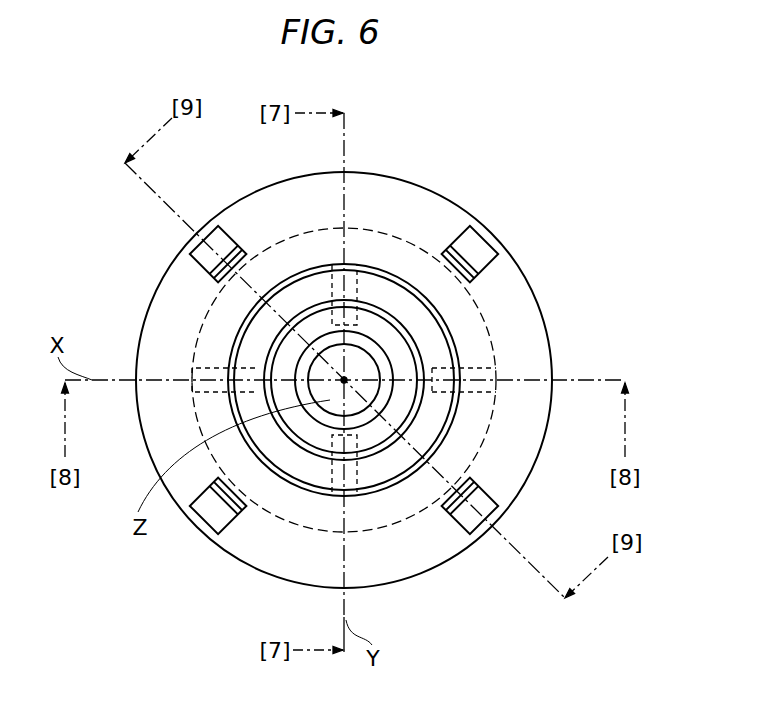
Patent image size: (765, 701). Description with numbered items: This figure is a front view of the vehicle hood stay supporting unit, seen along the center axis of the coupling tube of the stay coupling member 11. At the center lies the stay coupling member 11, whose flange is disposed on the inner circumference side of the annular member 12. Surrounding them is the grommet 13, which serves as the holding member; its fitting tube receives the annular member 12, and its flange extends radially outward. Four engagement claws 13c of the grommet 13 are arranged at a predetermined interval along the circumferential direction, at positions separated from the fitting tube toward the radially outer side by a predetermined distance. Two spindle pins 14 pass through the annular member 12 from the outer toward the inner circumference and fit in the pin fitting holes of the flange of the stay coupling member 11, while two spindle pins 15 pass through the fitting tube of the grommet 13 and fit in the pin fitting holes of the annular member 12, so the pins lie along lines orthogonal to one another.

The stay coupling member 11 is at (286, 357).
The annular member 12 is at (428, 342).
The grommet 13 is at (381, 190).
The engagement claws 13c is at (210, 262).
The spindle pins 14 is at (398, 236).
The spindle pins 15 is at (200, 368).